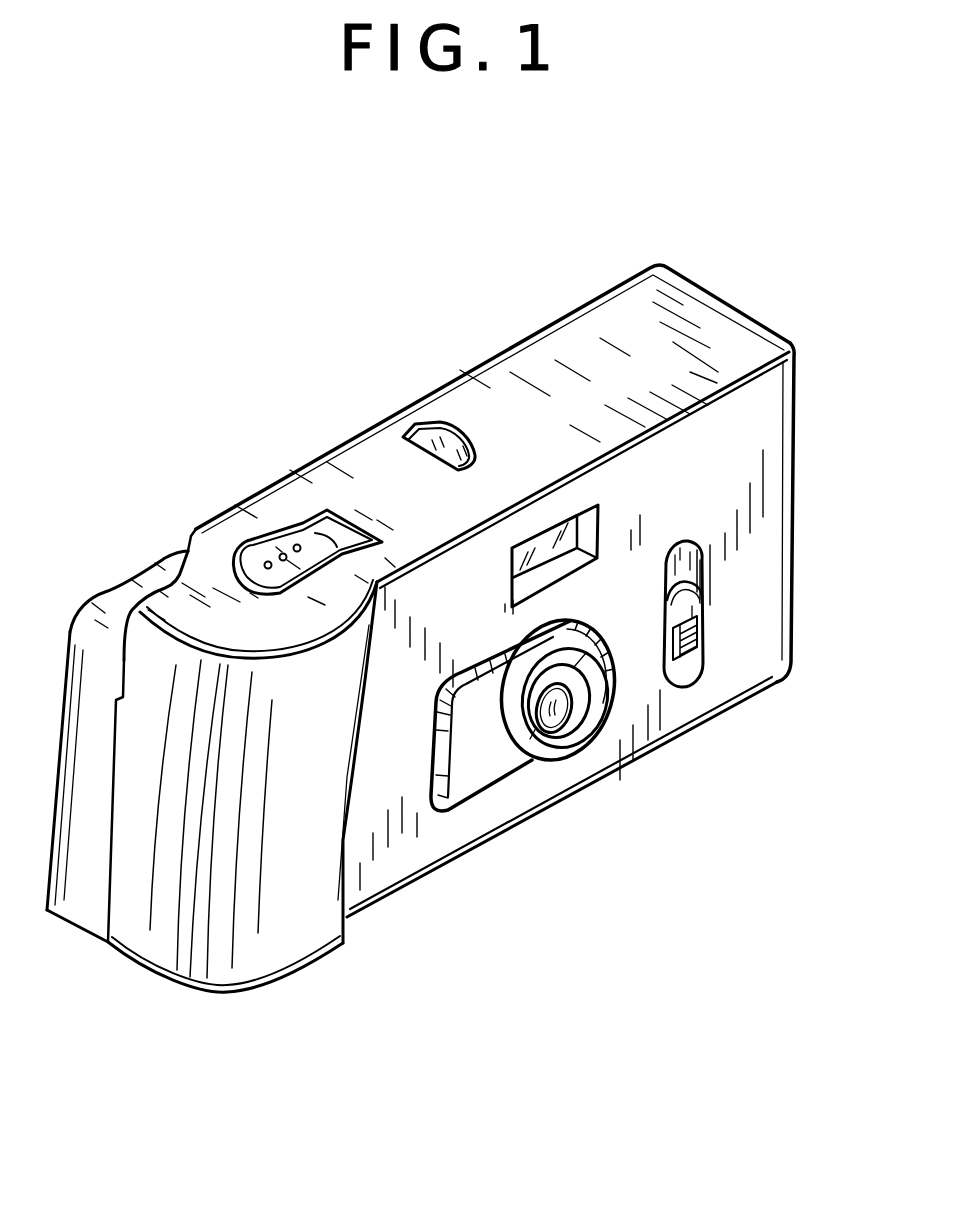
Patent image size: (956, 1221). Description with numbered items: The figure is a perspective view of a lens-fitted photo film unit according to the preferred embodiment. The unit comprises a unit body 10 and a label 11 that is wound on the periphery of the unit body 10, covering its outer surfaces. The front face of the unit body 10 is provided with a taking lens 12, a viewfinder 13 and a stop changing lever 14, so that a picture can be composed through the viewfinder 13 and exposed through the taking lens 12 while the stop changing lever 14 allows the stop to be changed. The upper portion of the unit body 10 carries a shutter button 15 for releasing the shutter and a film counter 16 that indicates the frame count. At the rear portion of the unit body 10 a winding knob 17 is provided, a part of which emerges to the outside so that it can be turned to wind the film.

The unit body 10 is at (402, 887).
The label 11 is at (752, 670).
The taking lens 12 is at (548, 724).
The viewfinder 13 is at (547, 537).
The stop changing lever 14 is at (681, 688).
The shutter button 15 is at (280, 542).
The film counter 16 is at (442, 432).
The winding knob 17 is at (157, 577).